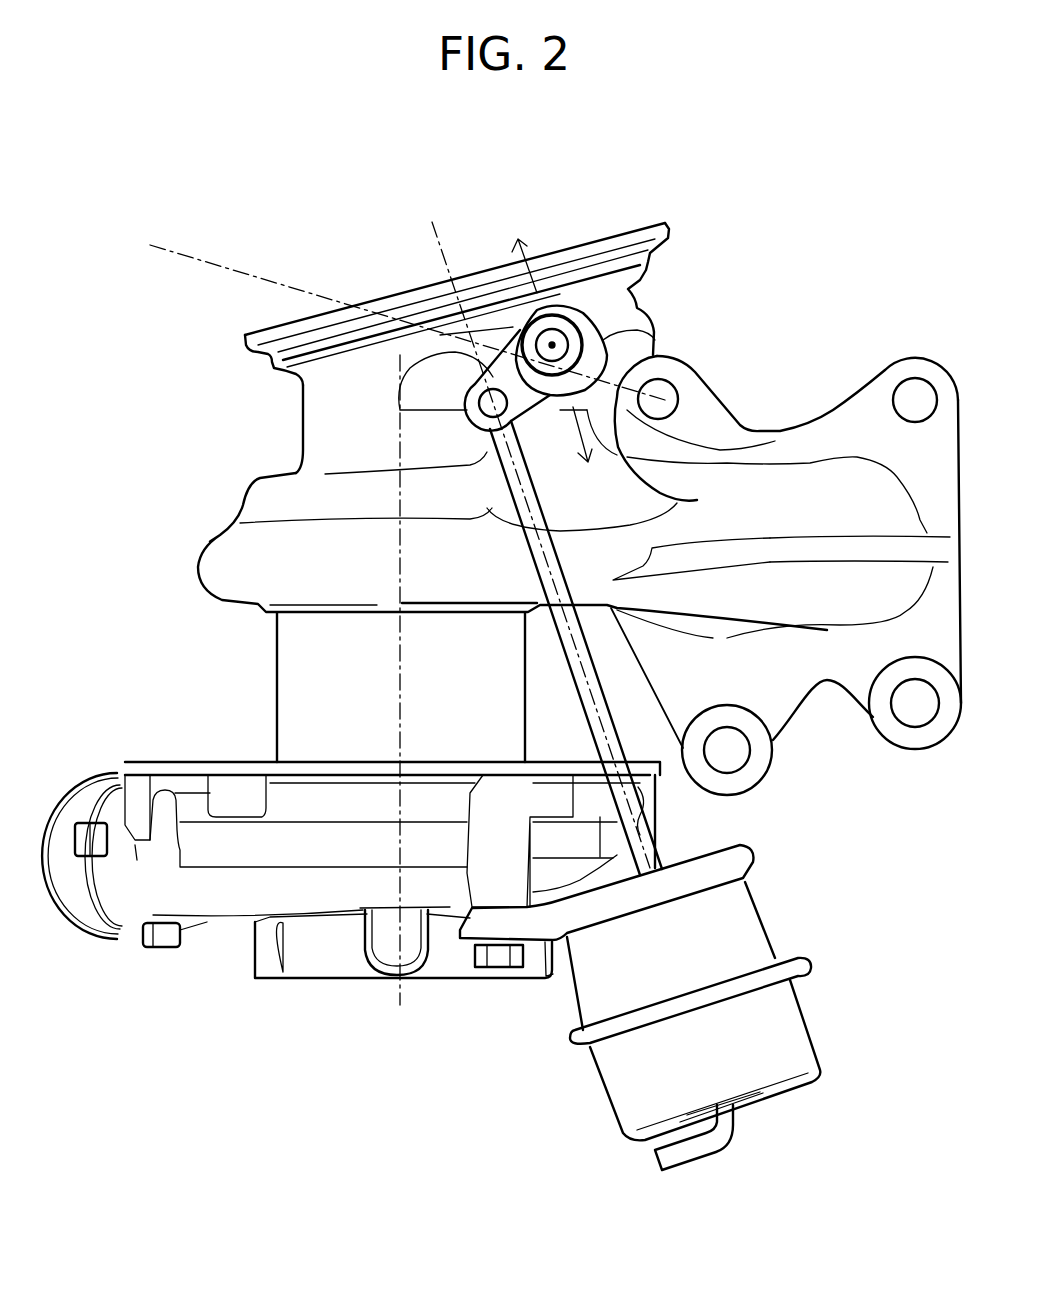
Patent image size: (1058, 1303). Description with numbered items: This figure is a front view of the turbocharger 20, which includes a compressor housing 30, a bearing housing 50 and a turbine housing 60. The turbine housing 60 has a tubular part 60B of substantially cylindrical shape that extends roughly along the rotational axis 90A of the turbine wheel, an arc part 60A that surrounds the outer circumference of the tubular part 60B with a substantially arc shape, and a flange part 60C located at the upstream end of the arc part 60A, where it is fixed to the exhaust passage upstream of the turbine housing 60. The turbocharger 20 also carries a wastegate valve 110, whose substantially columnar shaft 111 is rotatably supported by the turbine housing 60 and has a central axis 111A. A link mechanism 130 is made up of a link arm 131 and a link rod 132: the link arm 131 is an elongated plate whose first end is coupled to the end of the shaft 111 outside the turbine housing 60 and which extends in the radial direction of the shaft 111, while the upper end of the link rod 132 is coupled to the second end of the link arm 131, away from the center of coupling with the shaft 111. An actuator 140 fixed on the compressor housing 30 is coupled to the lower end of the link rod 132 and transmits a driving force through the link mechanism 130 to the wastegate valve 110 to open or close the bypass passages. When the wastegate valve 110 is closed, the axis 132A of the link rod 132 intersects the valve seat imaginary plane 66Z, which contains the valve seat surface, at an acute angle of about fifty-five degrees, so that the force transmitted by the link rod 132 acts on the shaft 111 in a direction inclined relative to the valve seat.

The turbocharger 20 is at (757, 251).
The compressor housing 30 is at (258, 960).
The bearing housing 50 is at (276, 690).
The turbine housing 60 is at (238, 508).
The arc part 60A is at (793, 487).
The tubular part 60B is at (301, 428).
The flange part 60C is at (867, 387).
The valve seat imaginary plane 66Z is at (162, 247).
The rotational axis 90A is at (397, 540).
The wastegate valve 110 is at (553, 330).
The shaft 111 is at (627, 313).
The central axis 111A is at (625, 345).
The link mechanism 130 is at (575, 688).
The link arm 131 is at (527, 392).
The link rod 132 is at (540, 573).
The axis 132A is at (437, 221).
The actuator 140 is at (808, 1013).